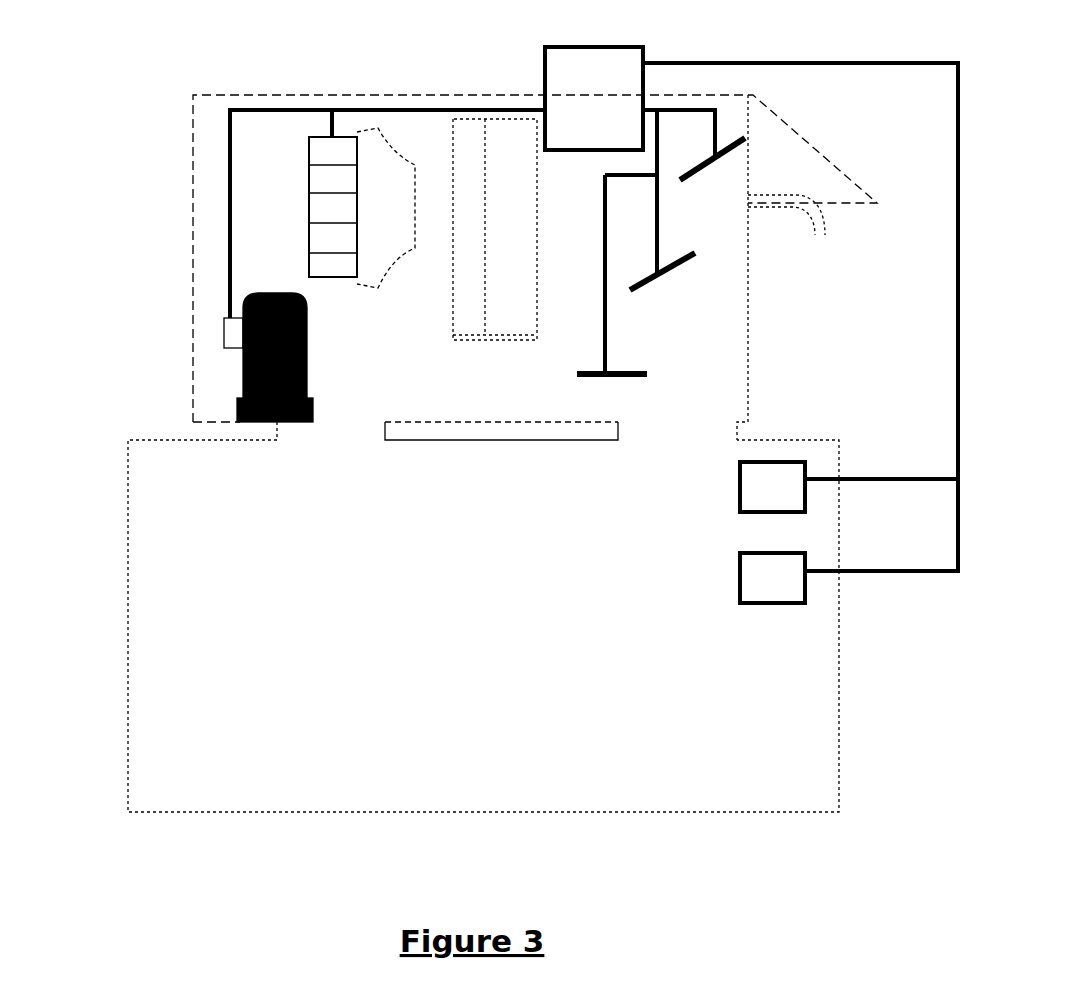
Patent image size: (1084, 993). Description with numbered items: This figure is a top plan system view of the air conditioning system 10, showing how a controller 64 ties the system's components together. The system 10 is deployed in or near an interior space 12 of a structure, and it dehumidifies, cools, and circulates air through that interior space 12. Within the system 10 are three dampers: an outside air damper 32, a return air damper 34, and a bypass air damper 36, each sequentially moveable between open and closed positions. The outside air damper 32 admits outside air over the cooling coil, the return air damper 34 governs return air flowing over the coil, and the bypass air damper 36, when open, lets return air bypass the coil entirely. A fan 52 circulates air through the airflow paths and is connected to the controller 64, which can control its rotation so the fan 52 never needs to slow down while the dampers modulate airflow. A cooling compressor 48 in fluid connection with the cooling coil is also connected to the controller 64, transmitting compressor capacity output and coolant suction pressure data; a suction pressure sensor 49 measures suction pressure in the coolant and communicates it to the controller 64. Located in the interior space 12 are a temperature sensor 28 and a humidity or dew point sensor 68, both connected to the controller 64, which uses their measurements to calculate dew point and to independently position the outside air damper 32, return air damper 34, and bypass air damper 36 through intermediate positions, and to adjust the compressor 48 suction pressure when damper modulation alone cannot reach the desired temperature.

The air conditioning system 10 is at (193, 150).
The interior space 12 is at (128, 537).
The temperature sensor 28 is at (740, 495).
The outside air damper 32 is at (742, 153).
The return air damper 34 is at (680, 270).
The bypass air damper 36 is at (637, 372).
The cooling compressor 48 is at (243, 380).
The suction pressure sensor 49 is at (224, 335).
The fan 52 is at (307, 210).
The controller 64 is at (545, 70).
The humidity or dew point sensor 68 is at (740, 583).